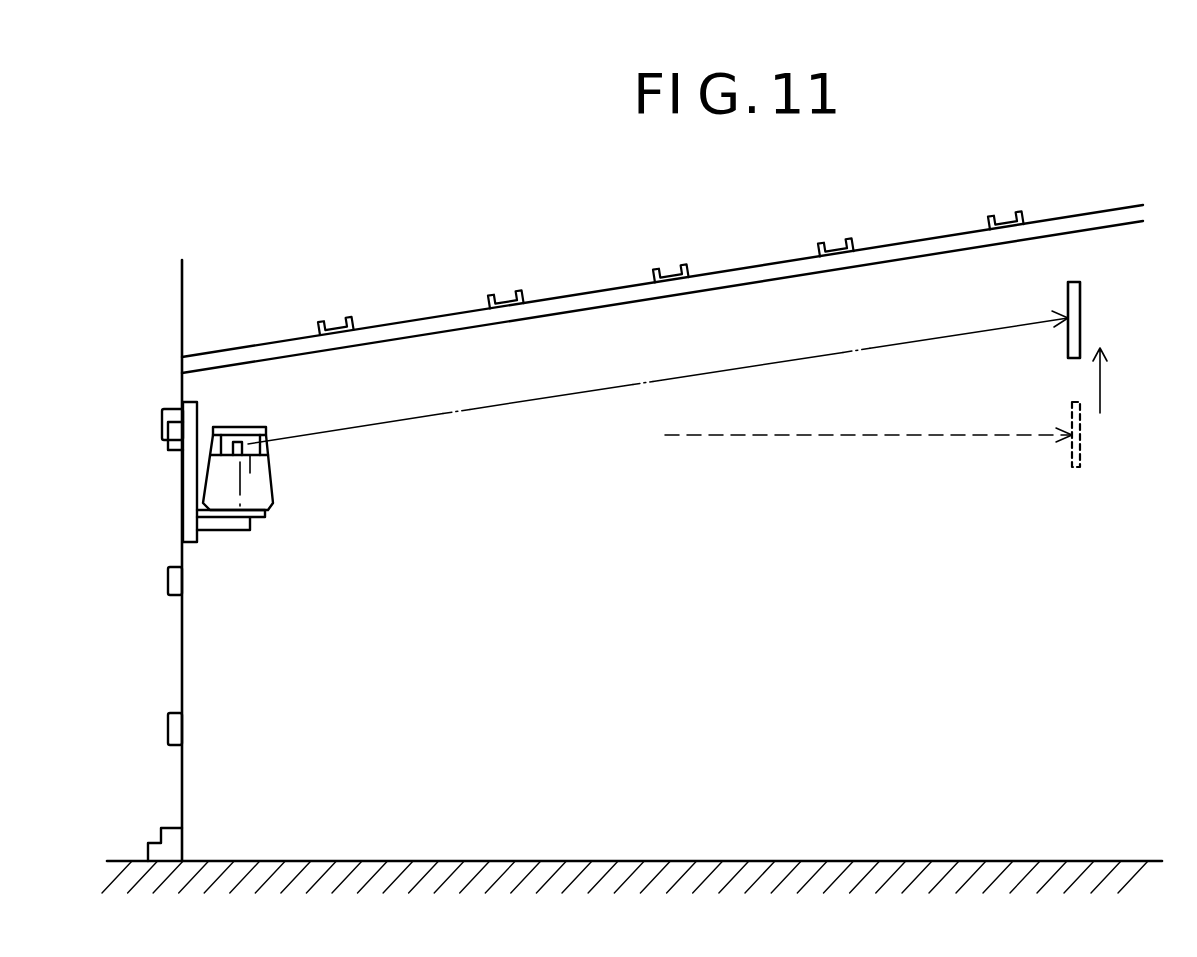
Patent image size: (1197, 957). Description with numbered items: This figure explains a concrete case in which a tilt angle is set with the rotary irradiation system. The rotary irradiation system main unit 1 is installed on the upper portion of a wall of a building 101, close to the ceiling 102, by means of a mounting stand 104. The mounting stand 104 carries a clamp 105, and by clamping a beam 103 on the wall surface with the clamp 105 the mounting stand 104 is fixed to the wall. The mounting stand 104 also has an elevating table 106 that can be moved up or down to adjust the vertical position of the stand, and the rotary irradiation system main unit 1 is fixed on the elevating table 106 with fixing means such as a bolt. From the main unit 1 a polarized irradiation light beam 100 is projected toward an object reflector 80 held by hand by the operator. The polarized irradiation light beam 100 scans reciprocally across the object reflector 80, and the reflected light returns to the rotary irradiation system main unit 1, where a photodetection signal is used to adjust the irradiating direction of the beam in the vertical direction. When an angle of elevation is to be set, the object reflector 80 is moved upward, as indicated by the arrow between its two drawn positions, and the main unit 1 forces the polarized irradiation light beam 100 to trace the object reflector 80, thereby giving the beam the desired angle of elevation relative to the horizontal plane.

The rotary irradiation system main unit 1 is at (275, 478).
The object reflector 80 is at (1080, 302).
The polarized irradiation light beam 100 is at (568, 397).
The building 101 is at (578, 295).
The ceiling 102 is at (858, 266).
The beam 103 is at (175, 446).
The mounting stand 104 is at (181, 518).
The clamp 105 is at (160, 417).
The elevating table 106 is at (209, 529).